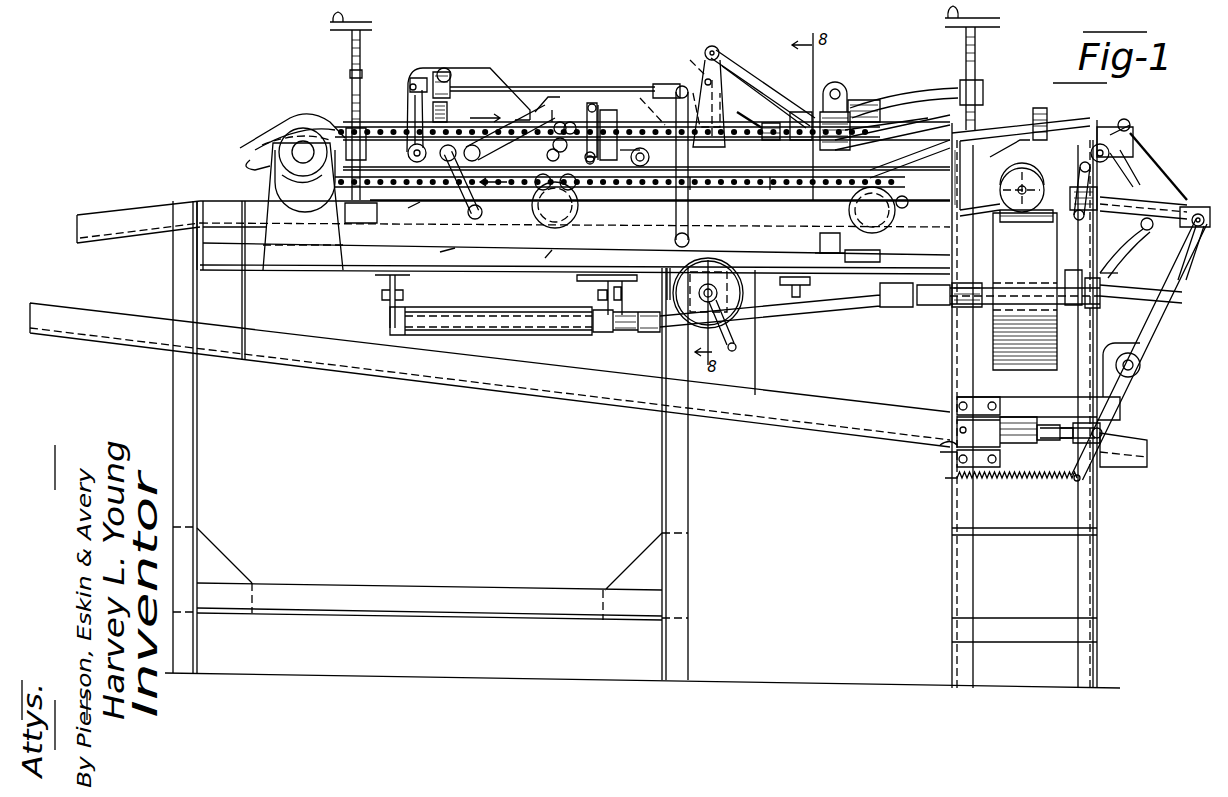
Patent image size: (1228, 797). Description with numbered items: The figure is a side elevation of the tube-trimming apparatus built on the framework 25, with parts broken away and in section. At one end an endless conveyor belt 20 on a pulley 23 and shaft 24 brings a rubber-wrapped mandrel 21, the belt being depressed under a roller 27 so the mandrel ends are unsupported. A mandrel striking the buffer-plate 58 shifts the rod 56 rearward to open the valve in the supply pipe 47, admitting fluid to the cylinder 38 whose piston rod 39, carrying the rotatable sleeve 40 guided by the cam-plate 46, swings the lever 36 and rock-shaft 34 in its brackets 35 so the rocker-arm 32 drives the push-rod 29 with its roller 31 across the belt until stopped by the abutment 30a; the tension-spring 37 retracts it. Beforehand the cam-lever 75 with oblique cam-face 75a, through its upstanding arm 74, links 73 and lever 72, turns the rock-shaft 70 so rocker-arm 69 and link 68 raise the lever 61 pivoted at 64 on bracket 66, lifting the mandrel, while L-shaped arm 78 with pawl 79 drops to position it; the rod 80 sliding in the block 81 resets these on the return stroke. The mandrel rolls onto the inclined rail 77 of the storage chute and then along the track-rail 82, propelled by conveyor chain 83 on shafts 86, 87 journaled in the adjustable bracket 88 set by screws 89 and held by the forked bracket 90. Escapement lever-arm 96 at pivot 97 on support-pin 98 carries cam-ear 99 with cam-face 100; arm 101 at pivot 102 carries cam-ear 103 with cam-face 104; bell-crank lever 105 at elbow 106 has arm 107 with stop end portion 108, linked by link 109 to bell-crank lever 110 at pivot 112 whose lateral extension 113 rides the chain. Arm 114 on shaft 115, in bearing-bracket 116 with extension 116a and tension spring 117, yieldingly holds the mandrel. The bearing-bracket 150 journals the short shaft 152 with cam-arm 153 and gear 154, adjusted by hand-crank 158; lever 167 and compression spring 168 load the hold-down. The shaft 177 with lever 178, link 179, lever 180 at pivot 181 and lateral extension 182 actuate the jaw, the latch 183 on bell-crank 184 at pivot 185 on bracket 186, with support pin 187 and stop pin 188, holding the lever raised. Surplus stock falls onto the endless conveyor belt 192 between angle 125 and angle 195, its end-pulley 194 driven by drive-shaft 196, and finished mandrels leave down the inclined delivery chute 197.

The endless conveyor belt 20 is at (1032, 372).
The mandrel 21 is at (550, 228).
The pulley 23 is at (1025, 291).
The shaft 24 is at (1172, 304).
The framework 25 is at (198, 430).
The roller 27 is at (1026, 284).
The push-rod 29 is at (1165, 198).
The abutment 30a is at (1175, 290).
The roller 31 is at (1072, 188).
The rocker-arm 32 is at (1160, 330).
The rock-shaft 34 is at (1140, 370).
The bracket 35 is at (1140, 348).
The lever 36 is at (1118, 403).
The tension-spring 37 is at (1022, 485).
The fluid-pressure-operated cylinder 38 is at (1010, 425).
The piston rod 39 is at (1082, 445).
The rotatable sleeve 40 is at (1048, 442).
The cam-plate 46 is at (1100, 433).
The supply pipe 47 is at (945, 449).
The rod 56 is at (1012, 194).
The buffer-plate 58 is at (1005, 185).
The lever 61 is at (1115, 266).
The pivot 64 is at (1150, 230).
The bracket 66 is at (1148, 148).
The link 68 is at (1125, 252).
The rocker-arm 69 is at (1082, 190).
The rock-shaft 70 is at (1097, 145).
The lever 72 is at (1110, 127).
The link 73 is at (1132, 138).
The upstanding arm 74 is at (1140, 170).
The cam-lever 75 is at (1200, 212).
The oblique cam-face 75a is at (1188, 250).
The inclined rail 77 is at (968, 215).
The L-shaped arm 78 is at (985, 128).
The spring-tensioned pawl 79 is at (1018, 130).
The rod 80 is at (1193, 206).
The apertured block 81 is at (1125, 118).
The track-rail 82 is at (507, 250).
The conveyor chain 83 is at (738, 190).
The shaft 86 is at (290, 128).
The shaft 87 is at (910, 136).
The bracket 88 is at (612, 110).
The screw 89 is at (352, 87).
The forked bracket 90 is at (280, 186).
The lever-arm 96 is at (922, 172).
The pivot 97 is at (627, 225).
The support-pin 98 is at (772, 192).
The cam-ear 99 is at (890, 133).
The oblique cam-face 100 is at (795, 110).
The arm 101 is at (898, 206).
The pivot 102 is at (645, 167).
The cam-ear 103 is at (745, 112).
The oblique cam-face 104 is at (772, 120).
The bell-crank lever 105 is at (692, 185).
The elbow 106 is at (675, 243).
The arm 107 is at (855, 260).
The end portion 108 is at (842, 240).
The link 109 is at (552, 96).
The bell-crank lever 110 is at (407, 125).
The pivot 112 is at (402, 212).
The lateral extension 113 is at (262, 138).
The arm 114 is at (832, 255).
The shaft 115 is at (850, 108).
The bearing-bracket 116 is at (840, 86).
The extension 116a is at (890, 98).
The tension spring 117 is at (866, 100).
The angle 125 is at (625, 290).
The bearing-bracket 150 is at (415, 66).
The short shaft 152 is at (455, 78).
The cam-arm 153 is at (492, 69).
The gear 154 is at (444, 68).
The hand-crank 158 is at (440, 258).
The lever 167 is at (542, 259).
The compression spring 168 is at (512, 128).
The shaft 177 is at (588, 103).
The lever 178 is at (580, 225).
The link 179 is at (600, 104).
The lever 180 is at (540, 108).
The pivot 181 is at (458, 195).
The lateral extension 182 is at (648, 97).
The latch 183 is at (700, 112).
The bell-crank 184 is at (735, 60).
The pivot 185 is at (713, 45).
The bracket 186 is at (705, 80).
The support pin 187 is at (745, 78).
The stop pin 188 is at (700, 62).
The endless conveyor belt 192 is at (525, 308).
The end-pulley 194 is at (600, 333).
The angle 195 is at (376, 283).
The drive-shaft 196 is at (870, 302).
The inclined delivery chute 197 is at (125, 215).